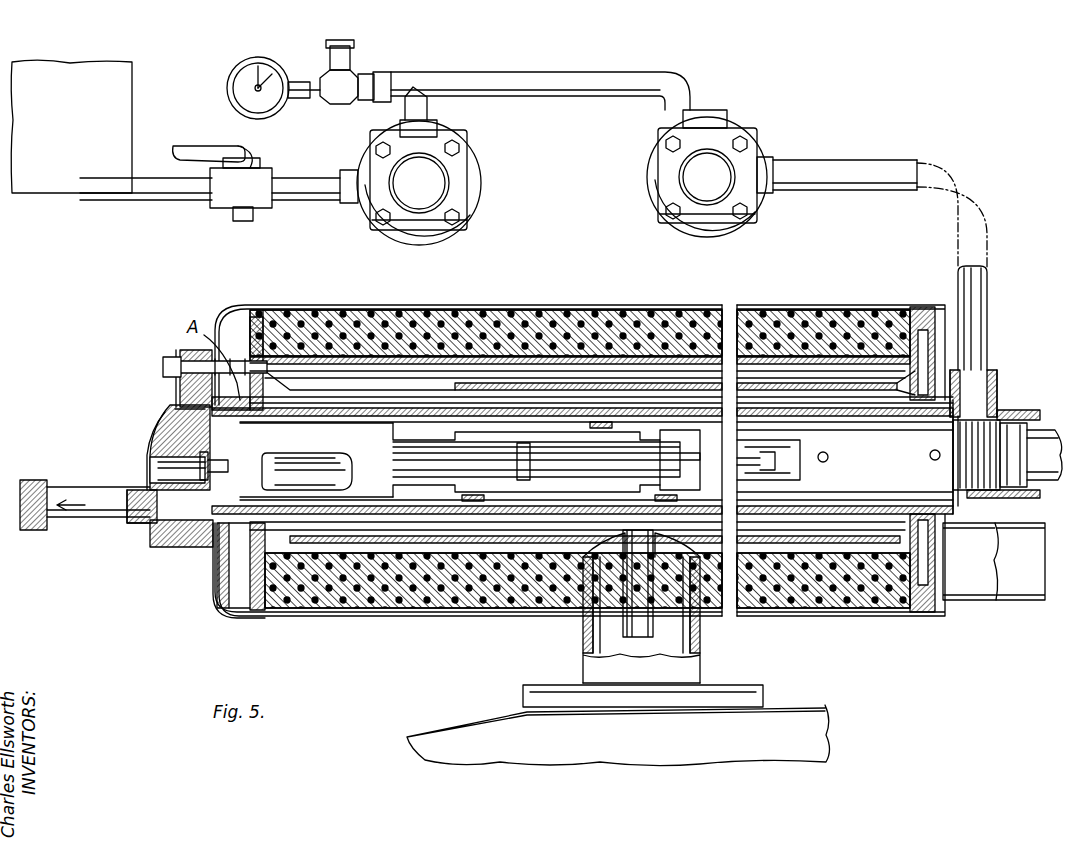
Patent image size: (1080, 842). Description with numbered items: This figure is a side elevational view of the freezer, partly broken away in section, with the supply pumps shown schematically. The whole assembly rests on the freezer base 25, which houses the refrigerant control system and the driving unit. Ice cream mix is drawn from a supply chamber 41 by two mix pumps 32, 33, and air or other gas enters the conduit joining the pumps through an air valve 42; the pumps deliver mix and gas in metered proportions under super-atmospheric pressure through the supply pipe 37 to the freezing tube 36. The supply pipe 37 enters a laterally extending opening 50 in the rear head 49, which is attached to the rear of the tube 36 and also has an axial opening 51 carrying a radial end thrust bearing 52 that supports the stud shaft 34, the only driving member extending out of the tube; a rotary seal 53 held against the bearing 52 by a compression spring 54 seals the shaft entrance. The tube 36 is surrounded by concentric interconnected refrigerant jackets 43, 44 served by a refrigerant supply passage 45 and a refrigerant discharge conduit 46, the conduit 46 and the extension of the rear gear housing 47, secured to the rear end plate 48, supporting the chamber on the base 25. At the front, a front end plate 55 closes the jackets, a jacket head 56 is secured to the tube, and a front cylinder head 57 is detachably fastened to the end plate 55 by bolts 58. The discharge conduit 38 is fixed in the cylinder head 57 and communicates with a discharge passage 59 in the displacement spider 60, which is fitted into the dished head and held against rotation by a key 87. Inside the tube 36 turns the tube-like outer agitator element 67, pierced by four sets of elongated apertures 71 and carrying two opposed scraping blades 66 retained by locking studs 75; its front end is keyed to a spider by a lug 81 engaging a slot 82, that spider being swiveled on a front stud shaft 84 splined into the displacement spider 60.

The freezer base 25 is at (806, 710).
The mix pump 32 is at (462, 201).
The mix pump 33 is at (648, 186).
The stud shaft 34 is at (1032, 476).
The freezing tube 36 is at (400, 520).
The supply pipe 37 is at (803, 178).
The discharge conduit 38 is at (92, 518).
The supply chamber 41 is at (48, 184).
The air valve 42 is at (354, 78).
The refrigerant jacket 43 is at (467, 543).
The refrigerant jacket 44 is at (513, 557).
The refrigerant supply passage 45 is at (630, 617).
The refrigerant discharge conduit 46 is at (702, 634).
The rear gear housing 47 is at (945, 315).
The rear end plate 48 is at (905, 588).
The rear head 49 is at (1000, 400).
The laterally extending opening 50 is at (997, 380).
The axial opening 51 is at (1040, 492).
The radial end thrust bearing 52 is at (1045, 422).
The rotary seal 53 is at (1003, 505).
The compression spring 54 is at (957, 441).
The front end plate 55 is at (228, 612).
The jacket head 56 is at (218, 585).
The front cylinder head 57 is at (165, 421).
The bolts 58 is at (166, 359).
The discharge passage 59 is at (180, 516).
The displacement spider 60 is at (152, 443).
The scraping blades 66 is at (838, 408).
The outer agitator element 67 is at (662, 480).
The elongated apertures 71 is at (384, 457).
The locking studs 75 is at (929, 455).
The lug 81 is at (228, 468).
The slot 82 is at (218, 462).
The front stud shaft 84 is at (160, 464).
The key 87 is at (180, 396).